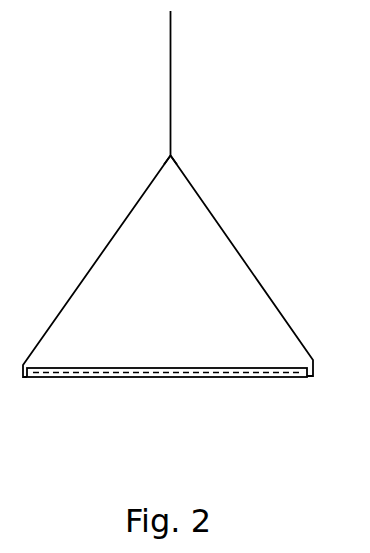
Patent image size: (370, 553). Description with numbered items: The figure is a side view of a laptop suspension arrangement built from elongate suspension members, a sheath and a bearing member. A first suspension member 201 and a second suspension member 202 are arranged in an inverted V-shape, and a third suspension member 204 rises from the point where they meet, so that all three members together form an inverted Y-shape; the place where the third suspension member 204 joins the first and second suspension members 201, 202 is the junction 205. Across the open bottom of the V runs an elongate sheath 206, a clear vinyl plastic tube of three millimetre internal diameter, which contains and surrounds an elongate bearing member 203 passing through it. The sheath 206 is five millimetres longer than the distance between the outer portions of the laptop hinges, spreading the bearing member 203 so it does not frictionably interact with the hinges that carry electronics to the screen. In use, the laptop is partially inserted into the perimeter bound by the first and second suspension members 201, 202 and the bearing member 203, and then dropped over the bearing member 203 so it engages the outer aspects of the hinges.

The first suspension member 201 is at (92, 260).
The second suspension member 202 is at (248, 260).
The bearing member 203 is at (157, 373).
The third suspension member 204 is at (175, 80).
The junction 205 is at (175, 152).
The sheath 206 is at (258, 380).